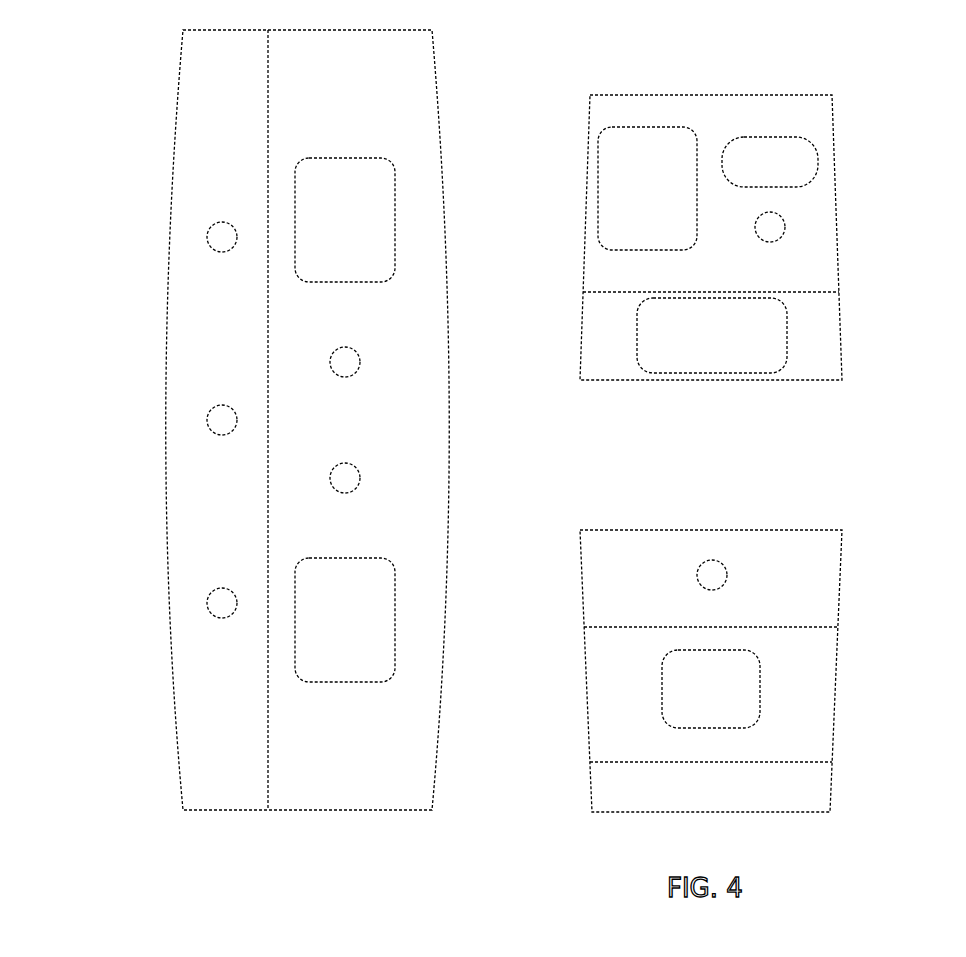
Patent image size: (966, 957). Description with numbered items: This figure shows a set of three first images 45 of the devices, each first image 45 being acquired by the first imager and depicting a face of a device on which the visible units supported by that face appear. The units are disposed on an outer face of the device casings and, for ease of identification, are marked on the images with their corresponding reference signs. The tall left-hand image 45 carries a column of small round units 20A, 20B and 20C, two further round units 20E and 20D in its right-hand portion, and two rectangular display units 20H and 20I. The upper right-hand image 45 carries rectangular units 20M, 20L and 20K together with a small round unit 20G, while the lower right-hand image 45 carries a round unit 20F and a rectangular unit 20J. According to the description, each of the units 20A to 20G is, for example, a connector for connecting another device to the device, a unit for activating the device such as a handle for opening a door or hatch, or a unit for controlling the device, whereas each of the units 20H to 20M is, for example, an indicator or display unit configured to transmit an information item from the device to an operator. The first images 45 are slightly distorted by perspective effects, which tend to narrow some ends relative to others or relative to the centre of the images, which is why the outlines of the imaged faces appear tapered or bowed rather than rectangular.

The first image 45 is at (165, 72).
The visible unit 20A is at (222, 237).
The visible unit 20B is at (222, 420).
The visible unit 20C is at (222, 602).
The visible unit 20D is at (345, 478).
The visible unit 20E is at (345, 362).
The visible unit 20F is at (712, 575).
The visible unit 20G is at (770, 227).
The visible unit 20H is at (345, 220).
The visible unit 20I is at (345, 620).
The visible unit 20J is at (735, 690).
The visible unit 20K is at (712, 335).
The visible unit 20L is at (770, 162).
The visible unit 20M is at (647, 188).